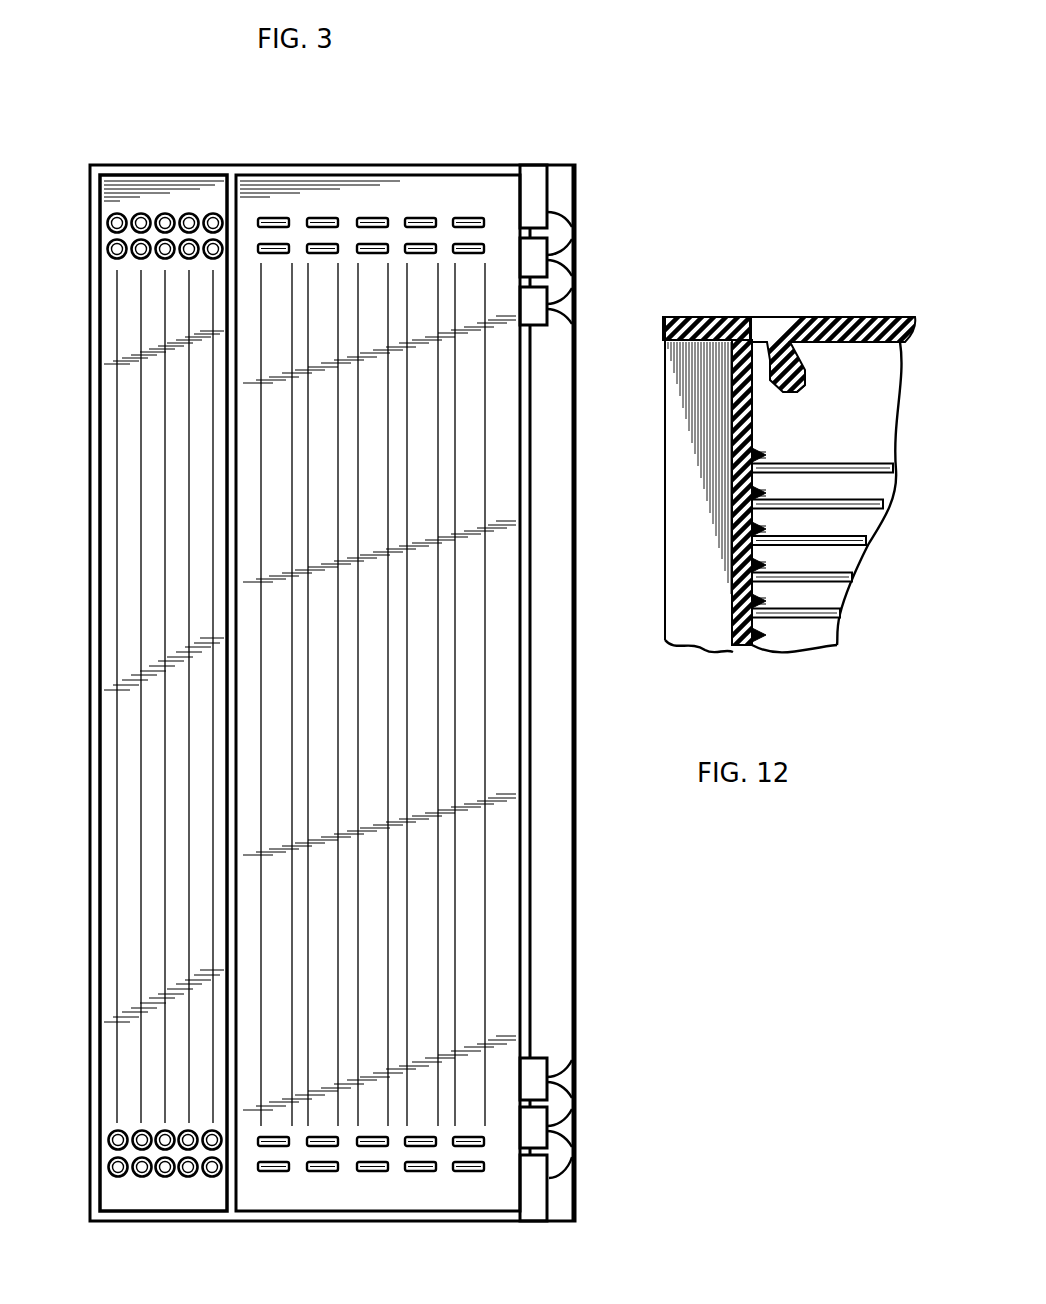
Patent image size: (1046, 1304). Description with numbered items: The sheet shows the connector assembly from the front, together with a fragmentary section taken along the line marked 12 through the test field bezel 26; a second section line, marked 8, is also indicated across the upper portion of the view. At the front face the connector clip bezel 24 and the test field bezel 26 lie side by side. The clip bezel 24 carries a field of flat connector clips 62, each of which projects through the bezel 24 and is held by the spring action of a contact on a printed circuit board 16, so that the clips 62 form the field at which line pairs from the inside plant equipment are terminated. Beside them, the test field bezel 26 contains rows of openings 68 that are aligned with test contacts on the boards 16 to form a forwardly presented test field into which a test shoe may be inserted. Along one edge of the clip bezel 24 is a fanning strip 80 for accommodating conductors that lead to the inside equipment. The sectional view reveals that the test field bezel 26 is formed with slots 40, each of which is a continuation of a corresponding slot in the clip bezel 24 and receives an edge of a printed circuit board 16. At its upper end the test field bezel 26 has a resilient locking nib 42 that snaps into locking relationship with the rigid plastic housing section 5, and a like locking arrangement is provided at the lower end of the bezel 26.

In FIG. 12, the housing section 5 is at (836, 320).
In FIG. 3, the section line 8- 8 is at (47, 213).
In FIG. 3, the cable stub 12 is at (123, 120).
In FIG. 12, the printed circuit board 16 is at (872, 474).
In FIG. 3, the connector clip bezel 24 is at (457, 1200).
In FIG. 3, the test field bezel 26 is at (88, 752).
In FIG. 12, the test field bezel 26 is at (723, 316).
In FIG. 12, the slot 40 is at (768, 455).
In FIG. 12, the locking nib 42 is at (806, 374).
In FIG. 3, the connector clip 62 is at (373, 217).
In FIG. 3, the opening 68 is at (189, 215).
In FIG. 12, the opening 68 is at (731, 490).
In FIG. 3, the fanning strip 80 is at (570, 1122).